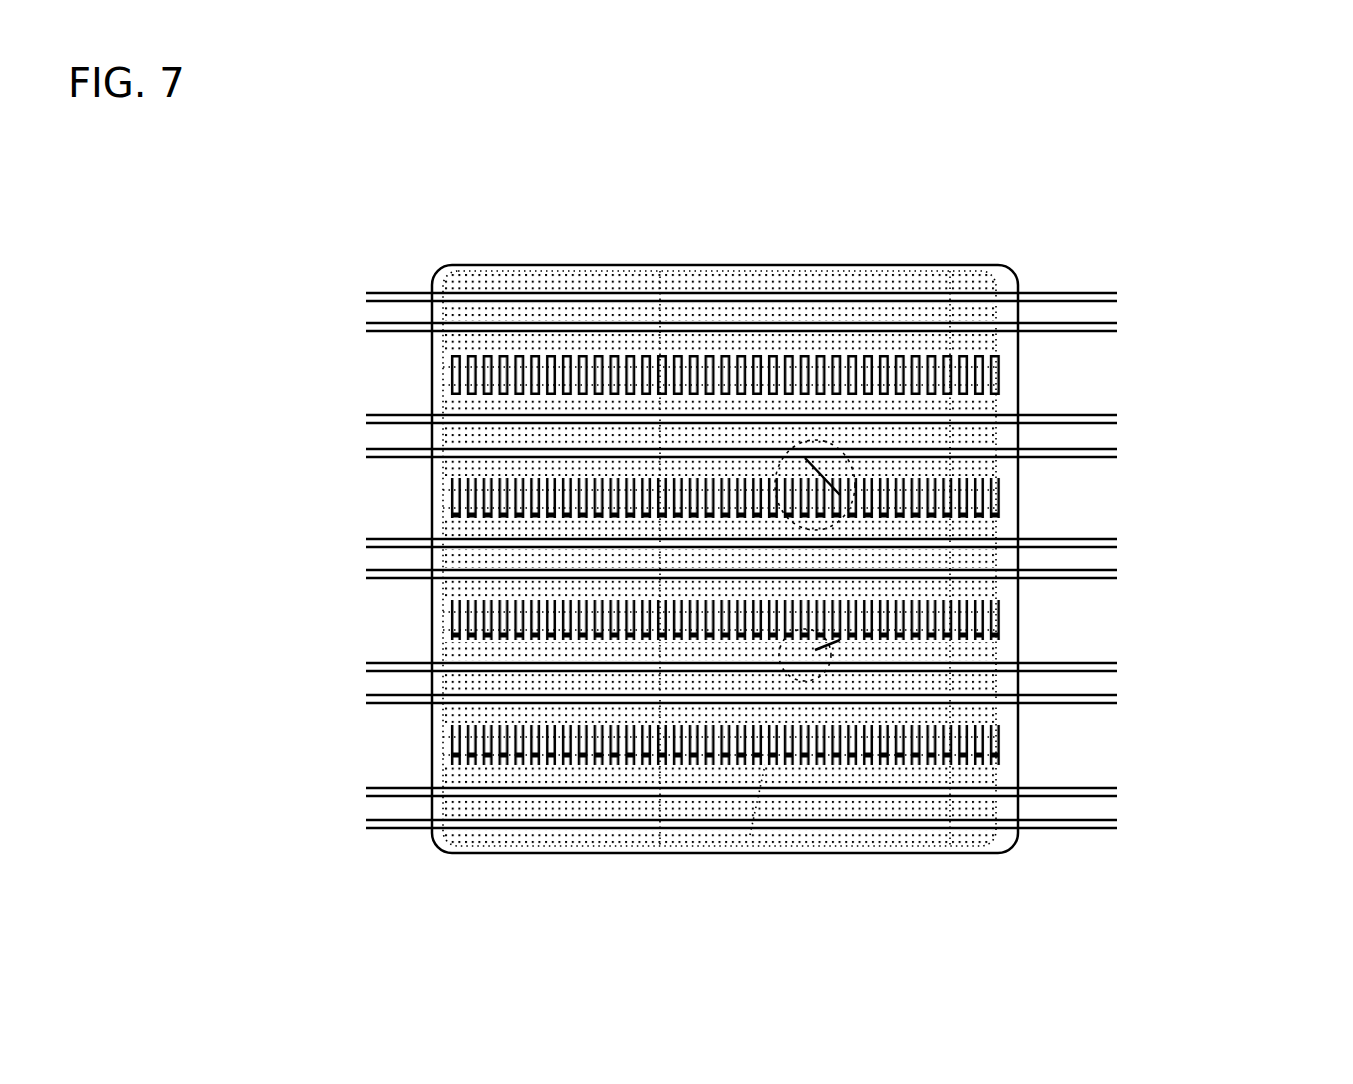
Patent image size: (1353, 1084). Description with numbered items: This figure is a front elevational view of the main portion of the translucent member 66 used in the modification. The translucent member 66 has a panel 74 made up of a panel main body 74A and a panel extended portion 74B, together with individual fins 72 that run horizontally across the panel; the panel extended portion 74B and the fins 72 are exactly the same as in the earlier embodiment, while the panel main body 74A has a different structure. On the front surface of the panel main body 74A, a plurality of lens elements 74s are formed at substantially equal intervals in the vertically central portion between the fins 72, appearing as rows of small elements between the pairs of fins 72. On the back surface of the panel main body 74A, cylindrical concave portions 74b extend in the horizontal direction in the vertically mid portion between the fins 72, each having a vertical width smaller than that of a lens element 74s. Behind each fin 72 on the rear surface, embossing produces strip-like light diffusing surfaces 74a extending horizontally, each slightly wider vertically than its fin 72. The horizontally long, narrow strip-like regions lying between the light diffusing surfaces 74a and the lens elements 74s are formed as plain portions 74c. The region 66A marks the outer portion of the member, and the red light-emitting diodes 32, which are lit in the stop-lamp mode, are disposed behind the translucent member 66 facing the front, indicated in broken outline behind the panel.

The translucent member 66 is at (1127, 245).
The module outer portion 66A is at (903, 243).
The fins 72 is at (380, 415).
The panel 74 is at (557, 265).
The panel main body 74A is at (680, 283).
The panel extended portion 74B is at (775, 283).
The light diffusing surfaces 74a is at (430, 645).
The cylindrical concave portions 74b is at (750, 835).
The plain portions 74c is at (462, 718).
The lens elements 74s is at (628, 760).
The light-emitting diodes 32 is at (875, 525).